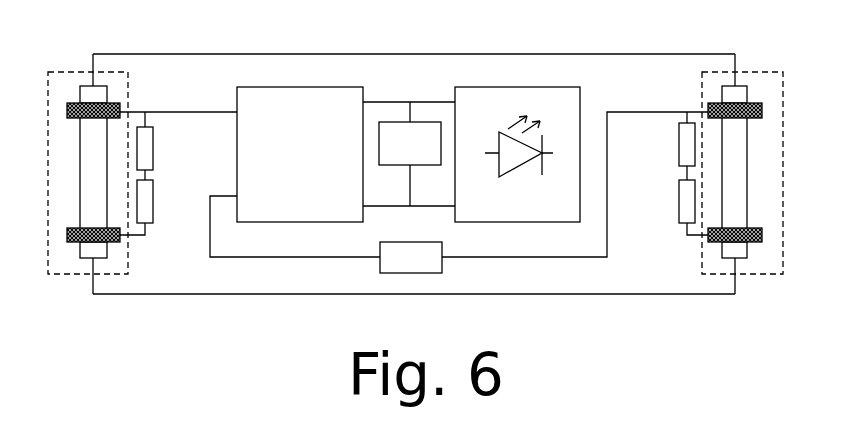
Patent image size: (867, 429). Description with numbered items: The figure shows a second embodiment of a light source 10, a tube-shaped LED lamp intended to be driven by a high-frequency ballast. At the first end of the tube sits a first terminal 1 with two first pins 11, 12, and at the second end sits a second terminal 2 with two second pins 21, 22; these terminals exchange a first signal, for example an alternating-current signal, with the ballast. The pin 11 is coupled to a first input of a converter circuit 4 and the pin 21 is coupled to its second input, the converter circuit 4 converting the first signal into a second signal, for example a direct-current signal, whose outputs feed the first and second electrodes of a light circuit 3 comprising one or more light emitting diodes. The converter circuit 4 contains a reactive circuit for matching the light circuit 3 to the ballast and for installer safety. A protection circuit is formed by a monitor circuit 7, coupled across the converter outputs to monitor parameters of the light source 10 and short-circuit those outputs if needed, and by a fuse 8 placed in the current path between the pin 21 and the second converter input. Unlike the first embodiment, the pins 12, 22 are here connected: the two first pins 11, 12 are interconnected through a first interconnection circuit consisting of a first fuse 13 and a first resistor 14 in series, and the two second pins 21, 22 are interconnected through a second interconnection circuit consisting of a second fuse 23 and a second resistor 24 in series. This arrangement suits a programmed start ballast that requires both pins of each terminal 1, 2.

The first terminal 1 is at (88, 182).
The second terminal 2 is at (742, 182).
The light circuit 3 is at (517, 141).
The converter circuit 4 is at (332, 160).
The monitor circuit 7 is at (410, 154).
The fuse 8 is at (544, 202).
The light source 10 is at (667, 294).
The first pin 11 is at (87, 125).
The first pin 12 is at (88, 219).
The first fuse 13 is at (178, 141).
The first resistor 14 is at (155, 202).
The second pin 21 is at (744, 127).
The second pin 22 is at (744, 222).
The second fuse 23 is at (669, 139).
The second resistor 24 is at (675, 200).